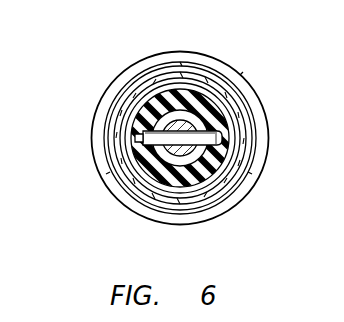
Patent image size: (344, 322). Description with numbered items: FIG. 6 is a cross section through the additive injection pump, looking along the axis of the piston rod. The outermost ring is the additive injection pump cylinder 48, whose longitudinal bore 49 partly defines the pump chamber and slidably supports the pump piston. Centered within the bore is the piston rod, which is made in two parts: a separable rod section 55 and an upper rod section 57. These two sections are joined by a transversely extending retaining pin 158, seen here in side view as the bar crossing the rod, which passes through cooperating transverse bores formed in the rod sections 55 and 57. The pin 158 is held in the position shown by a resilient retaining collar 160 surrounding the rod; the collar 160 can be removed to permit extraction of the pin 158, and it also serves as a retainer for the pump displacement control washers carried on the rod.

The additive injection pump cylinder 48 is at (213, 82).
The longitudinal bore 49 is at (238, 145).
The separable rod section 55 is at (172, 173).
The upper rod section 57 is at (166, 104).
The retaining pin 158 is at (130, 168).
The resilient retaining collar 160 is at (130, 112).